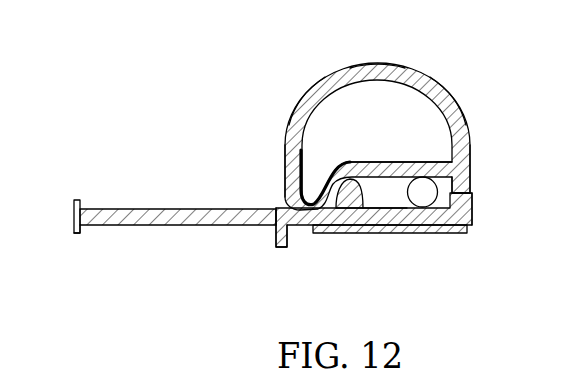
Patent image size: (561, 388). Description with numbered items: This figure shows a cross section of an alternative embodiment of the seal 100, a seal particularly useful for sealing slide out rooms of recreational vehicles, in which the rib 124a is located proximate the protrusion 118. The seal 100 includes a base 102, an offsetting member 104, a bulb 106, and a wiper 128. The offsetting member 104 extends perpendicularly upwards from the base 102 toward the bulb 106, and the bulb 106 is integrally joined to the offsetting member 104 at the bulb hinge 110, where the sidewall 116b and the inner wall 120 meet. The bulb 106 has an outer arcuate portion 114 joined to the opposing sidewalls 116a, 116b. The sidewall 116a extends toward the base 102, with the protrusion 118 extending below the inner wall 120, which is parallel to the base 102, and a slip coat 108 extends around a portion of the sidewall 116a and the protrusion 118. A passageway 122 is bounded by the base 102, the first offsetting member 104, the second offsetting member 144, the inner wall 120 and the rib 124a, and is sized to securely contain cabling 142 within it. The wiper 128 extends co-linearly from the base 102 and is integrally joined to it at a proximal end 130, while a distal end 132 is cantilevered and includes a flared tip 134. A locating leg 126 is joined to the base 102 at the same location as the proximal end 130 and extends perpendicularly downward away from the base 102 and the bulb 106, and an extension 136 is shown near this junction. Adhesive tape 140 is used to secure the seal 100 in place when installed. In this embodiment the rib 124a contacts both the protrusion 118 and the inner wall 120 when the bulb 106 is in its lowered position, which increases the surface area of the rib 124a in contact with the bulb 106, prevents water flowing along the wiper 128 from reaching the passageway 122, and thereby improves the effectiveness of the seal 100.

The seal 100 is at (118, 105).
The base 102 is at (467, 232).
The offsetting member 104 is at (473, 218).
The bulb 106 is at (317, 73).
The slip coat 108 is at (285, 147).
The bulb hinge 110 is at (473, 196).
The outer arcuate portion 114 is at (377, 63).
The sidewall 116a is at (294, 110).
The sidewall 116b is at (447, 90).
The protrusion 118 is at (286, 192).
The inner wall 120 is at (366, 161).
The passageway 122 is at (367, 206).
The rib 124a is at (348, 205).
The locating leg 126 is at (273, 236).
The wiper 128 is at (144, 259).
The proximal end 130 is at (273, 232).
The distal end 132 is at (74, 214).
The flared tip 134 is at (103, 244).
The extension 136 is at (276, 210).
The adhesive tape 140 is at (418, 233).
The cabling 142 is at (420, 177).
The second offsetting member 144 is at (472, 173).